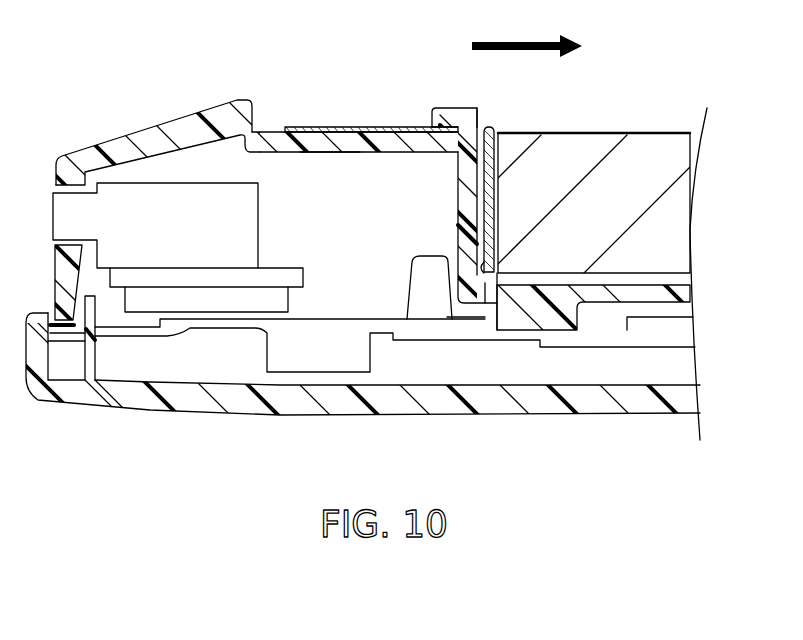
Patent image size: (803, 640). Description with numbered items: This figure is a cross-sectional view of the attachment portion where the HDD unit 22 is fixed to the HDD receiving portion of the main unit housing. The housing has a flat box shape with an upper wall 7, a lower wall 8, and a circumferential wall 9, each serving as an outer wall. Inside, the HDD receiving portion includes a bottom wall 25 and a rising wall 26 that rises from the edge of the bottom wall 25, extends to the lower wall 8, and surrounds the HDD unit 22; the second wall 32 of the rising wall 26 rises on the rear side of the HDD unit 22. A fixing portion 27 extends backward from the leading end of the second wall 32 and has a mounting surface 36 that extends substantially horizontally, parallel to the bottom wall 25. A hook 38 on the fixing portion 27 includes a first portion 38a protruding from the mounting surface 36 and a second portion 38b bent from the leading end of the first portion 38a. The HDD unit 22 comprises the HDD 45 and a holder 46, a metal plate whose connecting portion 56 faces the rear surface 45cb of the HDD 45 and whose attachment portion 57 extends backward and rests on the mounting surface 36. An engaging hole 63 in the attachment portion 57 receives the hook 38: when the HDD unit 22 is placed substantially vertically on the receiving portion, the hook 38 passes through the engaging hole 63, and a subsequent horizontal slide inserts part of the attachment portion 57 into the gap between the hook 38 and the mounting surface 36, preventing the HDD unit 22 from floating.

The upper wall 7 is at (363, 409).
The lower wall 8 is at (147, 134).
The circumferential wall 9 is at (58, 273).
The HDD unit 22 is at (681, 120).
The bottom wall 25 is at (610, 303).
The rising wall 26 is at (462, 198).
The fixing portion 27 is at (332, 153).
The second wall 32 is at (462, 234).
The mounting surface 36 is at (277, 151).
The hook 38 is at (455, 67).
The first portion 38a is at (478, 105).
The second portion 38b is at (438, 108).
The HDD 45 is at (632, 138).
The rear surface 45cb is at (492, 185).
The holder 46 is at (485, 242).
The connecting portion 56 is at (493, 235).
The attachment portion 57 is at (318, 116).
The engaging hole 63 is at (367, 131).